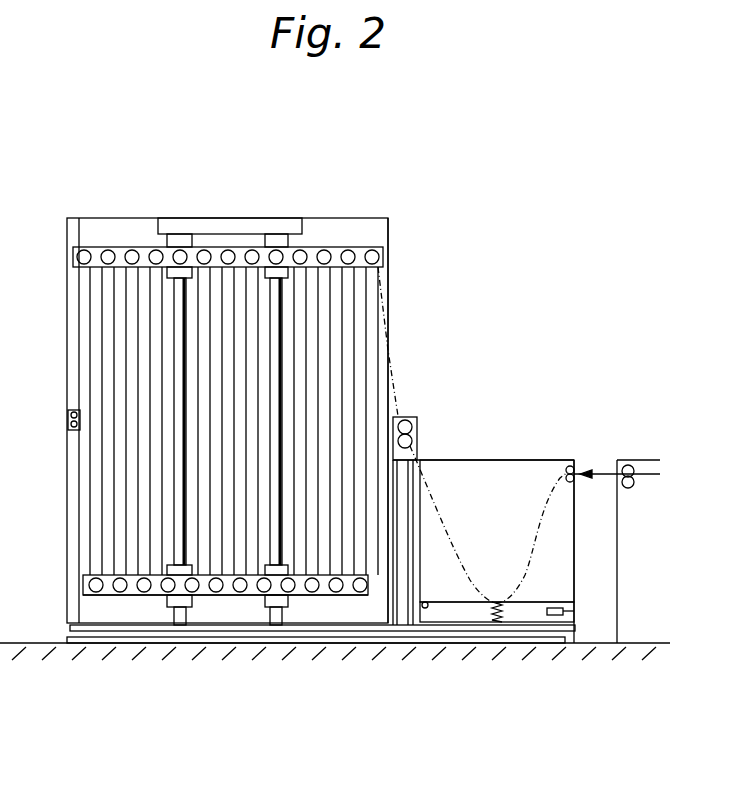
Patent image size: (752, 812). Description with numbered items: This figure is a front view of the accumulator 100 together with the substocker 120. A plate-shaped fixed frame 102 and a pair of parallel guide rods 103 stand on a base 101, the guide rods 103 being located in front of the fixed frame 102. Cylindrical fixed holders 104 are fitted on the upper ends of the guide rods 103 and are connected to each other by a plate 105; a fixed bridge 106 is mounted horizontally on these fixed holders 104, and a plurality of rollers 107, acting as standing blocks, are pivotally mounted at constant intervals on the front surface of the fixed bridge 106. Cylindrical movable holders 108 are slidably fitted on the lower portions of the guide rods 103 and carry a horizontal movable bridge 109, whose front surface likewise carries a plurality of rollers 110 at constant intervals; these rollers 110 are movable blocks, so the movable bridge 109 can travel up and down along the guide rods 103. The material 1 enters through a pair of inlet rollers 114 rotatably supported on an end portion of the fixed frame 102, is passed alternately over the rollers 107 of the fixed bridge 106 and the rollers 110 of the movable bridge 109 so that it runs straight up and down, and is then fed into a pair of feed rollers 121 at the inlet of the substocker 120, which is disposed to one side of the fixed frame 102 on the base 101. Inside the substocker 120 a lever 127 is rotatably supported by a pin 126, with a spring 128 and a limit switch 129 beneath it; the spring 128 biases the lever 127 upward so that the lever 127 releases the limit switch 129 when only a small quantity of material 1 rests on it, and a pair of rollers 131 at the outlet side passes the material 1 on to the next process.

The accumulator 100 is at (417, 297).
The material 1 is at (125, 462).
The base 101 is at (255, 632).
The fixed frame 102 is at (110, 216).
The guide rods 103 is at (180, 385).
The cylindrical fixed holders 104 is at (182, 243).
The plate 105 is at (283, 226).
The fixed bridge 106 is at (360, 250).
The rollers 107 is at (156, 250).
The cylindrical movable holders 108 is at (258, 600).
The movable bridge 109 is at (300, 593).
The rollers 110 is at (143, 588).
The inlet rollers 114 is at (68, 420).
The substocker 120 is at (512, 478).
The feed rollers 121 is at (415, 440).
The pin 126 is at (427, 602).
The lever 127 is at (540, 587).
The spring 128 is at (503, 613).
The limit switch 129 is at (568, 611).
The rollers 131 is at (576, 470).